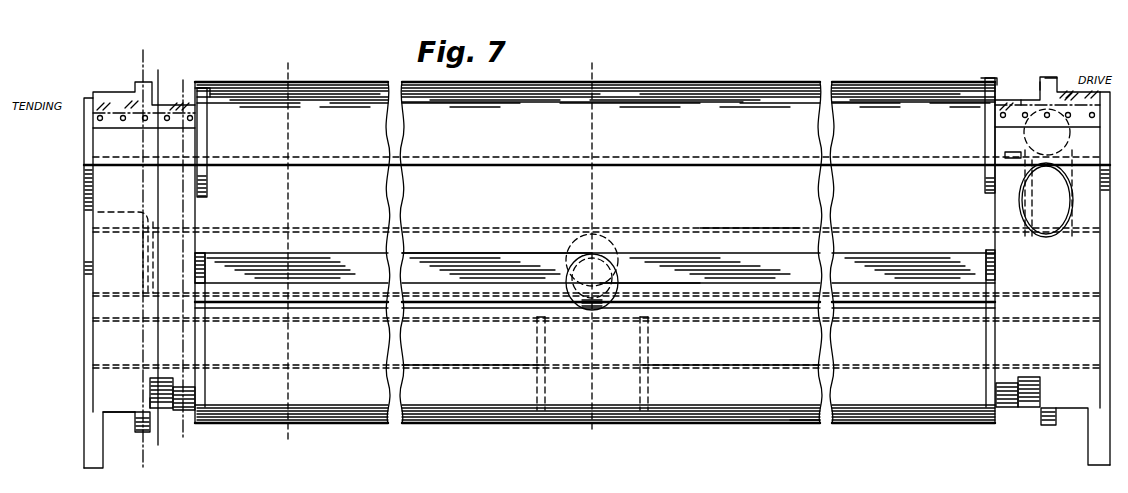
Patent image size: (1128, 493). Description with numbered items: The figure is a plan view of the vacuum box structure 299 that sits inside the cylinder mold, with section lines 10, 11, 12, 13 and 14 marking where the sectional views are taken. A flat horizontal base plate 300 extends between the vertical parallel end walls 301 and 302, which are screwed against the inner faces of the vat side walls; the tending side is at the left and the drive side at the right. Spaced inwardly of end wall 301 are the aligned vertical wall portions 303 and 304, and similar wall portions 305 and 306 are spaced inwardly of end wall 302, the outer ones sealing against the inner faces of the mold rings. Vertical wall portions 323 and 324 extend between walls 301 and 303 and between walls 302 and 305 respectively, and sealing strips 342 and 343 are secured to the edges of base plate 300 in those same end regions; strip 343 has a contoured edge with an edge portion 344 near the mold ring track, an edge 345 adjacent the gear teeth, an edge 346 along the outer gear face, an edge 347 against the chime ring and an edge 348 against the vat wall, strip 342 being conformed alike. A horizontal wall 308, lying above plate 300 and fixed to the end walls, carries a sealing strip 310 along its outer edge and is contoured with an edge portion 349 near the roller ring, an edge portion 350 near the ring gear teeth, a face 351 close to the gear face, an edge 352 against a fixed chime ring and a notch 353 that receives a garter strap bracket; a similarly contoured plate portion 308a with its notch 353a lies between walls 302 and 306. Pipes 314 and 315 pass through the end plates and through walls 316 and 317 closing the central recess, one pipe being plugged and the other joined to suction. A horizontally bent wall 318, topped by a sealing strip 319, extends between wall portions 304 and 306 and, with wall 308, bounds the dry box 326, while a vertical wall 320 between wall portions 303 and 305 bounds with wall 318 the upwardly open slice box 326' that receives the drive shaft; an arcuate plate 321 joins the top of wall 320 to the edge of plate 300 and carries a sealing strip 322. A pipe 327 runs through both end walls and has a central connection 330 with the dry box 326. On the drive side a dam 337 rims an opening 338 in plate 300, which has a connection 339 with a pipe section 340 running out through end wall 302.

The section line 10- 10 is at (158, 467).
The section line 11- 11 is at (175, 446).
The section line 12- 12 is at (194, 434).
The section line 13- 13 is at (305, 434).
The section line 14- 14 is at (617, 433).
The vacuum box structure 299 is at (753, 424).
The base plate 300 is at (113, 143).
The end wall 301 is at (83, 150).
The end wall 302 is at (1112, 200).
The vertical wall portion 303 is at (200, 143).
The vertical wall portion 304 is at (205, 347).
The vertical wall portion 305 is at (985, 168).
The vertical wall portion 306 is at (988, 333).
The horizontal wall 308 is at (103, 380).
The plate portion 308a is at (1060, 399).
The sealing strip 310 is at (812, 415).
The pipe 314 is at (475, 365).
The pipe 315 is at (758, 365).
The wall 316 is at (543, 395).
The wall 317 is at (647, 385).
The horizontally bent wall 318 is at (970, 265).
The sealing strip 319 is at (647, 283).
The vertical wall 320 is at (465, 157).
The arcuate plate 321 is at (743, 102).
The sealing strip 322 is at (861, 80).
The vertical wall portion 323 is at (128, 167).
The vertical wall portion 324 is at (1005, 157).
The dry box 326 is at (790, 381).
The slice box 326' is at (497, 223).
The pipe 327 is at (777, 225).
The connection 330 is at (601, 243).
The dam 337 is at (1021, 217).
The opening 338 is at (1043, 192).
The connection 339 is at (1025, 176).
The pipe section 340 is at (1047, 172).
The sealing strip 342 is at (112, 93).
The sealing strip 343 is at (1040, 108).
The edge portion 344 is at (1005, 100).
The edge 345 is at (1021, 100).
The edge 346 is at (1038, 82).
The edge 347 is at (1045, 78).
The edge 348 is at (1063, 97).
The edge portion 349 is at (188, 418).
The edge portion 350 is at (162, 410).
The face 351 is at (150, 395).
The edge 352 is at (137, 427).
The notch 353 is at (120, 417).
The notch 353a is at (1071, 415).